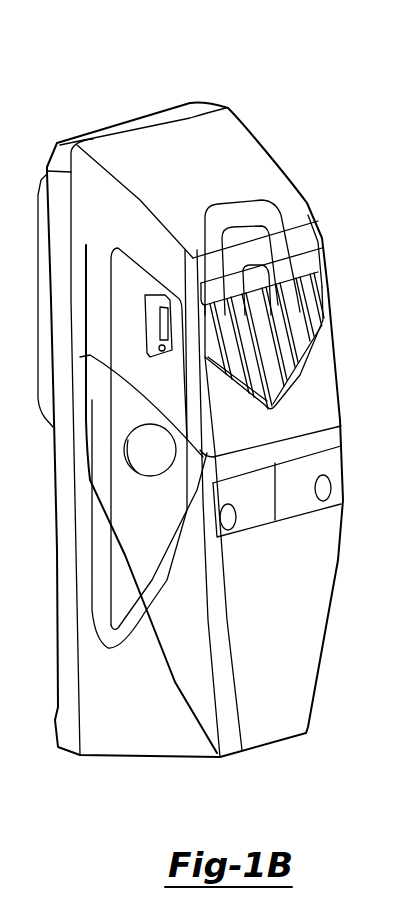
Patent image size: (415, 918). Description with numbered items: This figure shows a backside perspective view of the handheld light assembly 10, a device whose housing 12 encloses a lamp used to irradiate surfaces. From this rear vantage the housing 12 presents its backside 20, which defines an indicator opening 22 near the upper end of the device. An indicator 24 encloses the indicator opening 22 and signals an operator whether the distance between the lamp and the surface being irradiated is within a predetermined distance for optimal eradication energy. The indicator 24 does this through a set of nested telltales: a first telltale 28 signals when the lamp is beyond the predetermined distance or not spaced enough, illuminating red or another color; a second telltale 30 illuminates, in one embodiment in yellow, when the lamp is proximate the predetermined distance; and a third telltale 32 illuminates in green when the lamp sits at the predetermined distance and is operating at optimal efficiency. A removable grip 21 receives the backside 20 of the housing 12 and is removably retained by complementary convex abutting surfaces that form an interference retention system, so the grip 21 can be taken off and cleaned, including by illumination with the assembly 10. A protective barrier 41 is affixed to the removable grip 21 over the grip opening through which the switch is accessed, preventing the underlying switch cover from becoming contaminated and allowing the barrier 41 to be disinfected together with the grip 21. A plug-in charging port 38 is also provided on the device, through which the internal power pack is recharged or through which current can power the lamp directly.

The handheld light assembly 10 is at (244, 84).
The housing 12 is at (225, 162).
The backside 20 is at (325, 400).
The removable grip 21 is at (298, 586).
The indicator opening 22 is at (308, 283).
The indicator 24 is at (304, 202).
The first telltale 28 is at (257, 201).
The second telltale 30 is at (262, 226).
The third telltale 32 is at (257, 280).
The charging port 38 is at (165, 320).
The protective barrier 41 is at (147, 462).